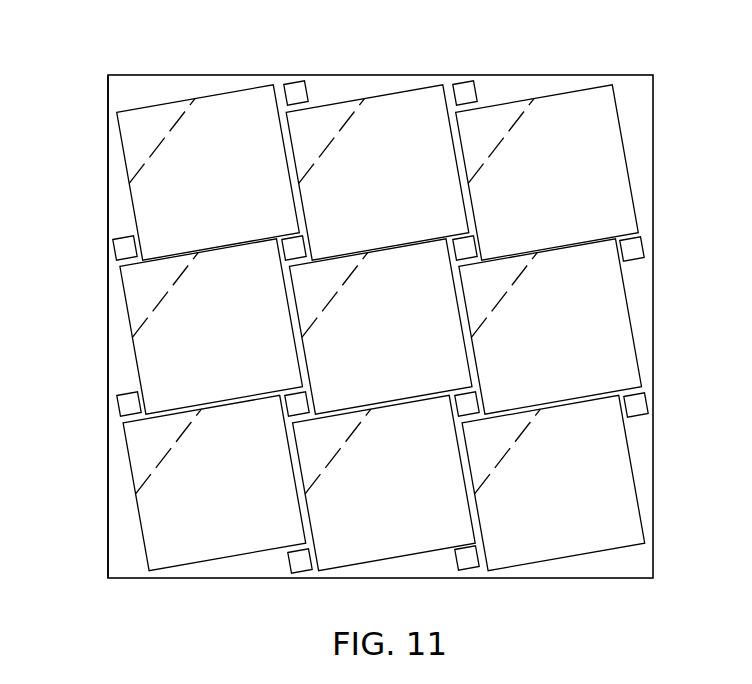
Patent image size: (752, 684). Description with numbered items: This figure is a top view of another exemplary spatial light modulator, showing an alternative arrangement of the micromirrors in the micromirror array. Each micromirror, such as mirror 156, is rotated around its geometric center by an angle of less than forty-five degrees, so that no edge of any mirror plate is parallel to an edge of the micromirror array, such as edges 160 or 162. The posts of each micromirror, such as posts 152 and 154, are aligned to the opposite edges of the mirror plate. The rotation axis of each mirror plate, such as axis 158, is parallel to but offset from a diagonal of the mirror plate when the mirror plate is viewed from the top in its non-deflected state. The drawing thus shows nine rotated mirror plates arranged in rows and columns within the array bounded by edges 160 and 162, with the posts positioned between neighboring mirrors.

The post 152 is at (295, 93).
The post 154 is at (123, 245).
The micromirror 156 is at (218, 113).
The rotation axis 158 is at (168, 128).
The edge of the micromirror array 160 is at (410, 76).
The edge of the micromirror array 162 is at (108, 173).